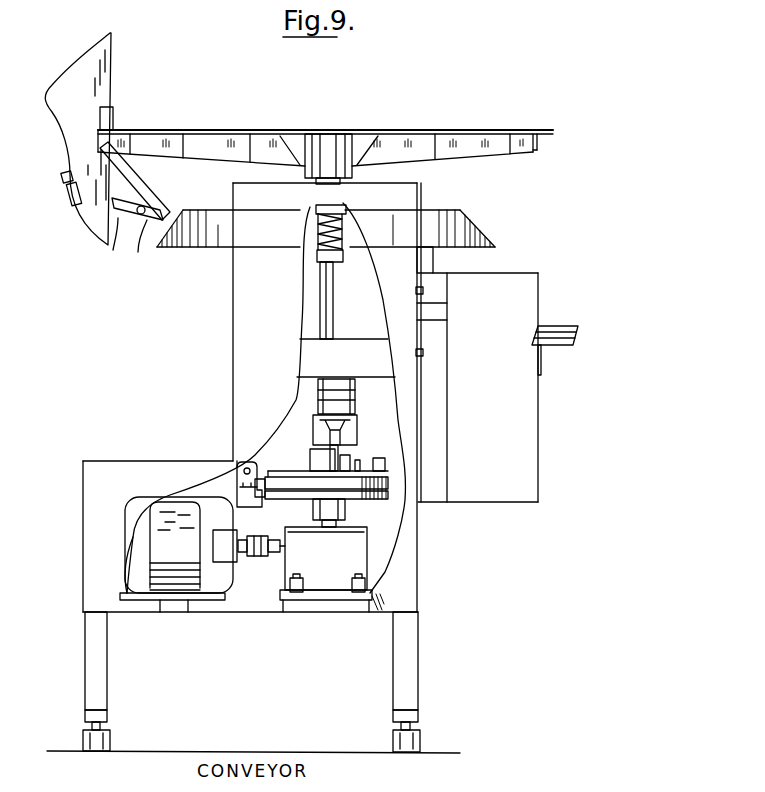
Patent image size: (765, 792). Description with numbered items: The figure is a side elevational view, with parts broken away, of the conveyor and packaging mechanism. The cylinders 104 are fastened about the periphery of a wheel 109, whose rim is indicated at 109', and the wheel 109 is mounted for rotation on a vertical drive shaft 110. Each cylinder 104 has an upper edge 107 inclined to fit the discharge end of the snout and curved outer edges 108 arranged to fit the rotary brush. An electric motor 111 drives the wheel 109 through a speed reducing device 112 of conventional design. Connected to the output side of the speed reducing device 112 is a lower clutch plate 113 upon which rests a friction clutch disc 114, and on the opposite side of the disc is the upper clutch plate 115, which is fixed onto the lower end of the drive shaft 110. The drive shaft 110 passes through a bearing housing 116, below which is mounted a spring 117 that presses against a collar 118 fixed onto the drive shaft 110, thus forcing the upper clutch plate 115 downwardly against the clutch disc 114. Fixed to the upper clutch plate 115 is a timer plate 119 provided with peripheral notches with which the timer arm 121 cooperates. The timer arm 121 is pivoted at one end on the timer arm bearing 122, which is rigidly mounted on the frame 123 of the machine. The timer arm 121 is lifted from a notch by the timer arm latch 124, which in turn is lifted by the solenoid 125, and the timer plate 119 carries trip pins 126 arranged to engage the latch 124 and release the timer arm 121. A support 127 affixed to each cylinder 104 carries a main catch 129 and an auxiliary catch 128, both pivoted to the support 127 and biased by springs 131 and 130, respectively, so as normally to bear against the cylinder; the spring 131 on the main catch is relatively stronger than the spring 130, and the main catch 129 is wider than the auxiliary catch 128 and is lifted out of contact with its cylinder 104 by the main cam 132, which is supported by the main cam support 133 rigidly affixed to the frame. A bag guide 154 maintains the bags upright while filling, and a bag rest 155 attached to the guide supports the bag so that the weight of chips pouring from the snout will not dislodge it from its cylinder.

The cylinder 104 is at (100, 97).
The upper edge 107 is at (80, 66).
The curved outer edges 108 is at (68, 143).
The wheel 109 is at (325, 143).
The turntable rim 109' is at (537, 164).
The drive shaft 110 is at (330, 321).
The electric motor 111 is at (200, 522).
The speed reducing device 112 is at (360, 549).
The lower clutch plate 113 is at (343, 500).
The friction clutch disc 114 is at (390, 486).
The upper clutch plate 115 is at (300, 480).
The bearing housing 116 is at (341, 207).
The spring 117 is at (333, 240).
The collar 118 is at (336, 262).
The timer plate 119 is at (390, 472).
The timer arm 121 is at (303, 452).
The timer arm bearing 122 is at (238, 486).
The frame 123 is at (226, 478).
The timer arm latch 124 is at (346, 456).
The solenoid 125 is at (353, 403).
The trip pins 126 is at (366, 470).
The support 127 is at (127, 191).
The auxiliary catch 128 is at (157, 216).
The main catch 129 is at (145, 232).
The spring 130 is at (150, 207).
The spring 131 is at (117, 240).
The main cam 132 is at (486, 235).
The main cam support 133 is at (436, 269).
The bag guide 154 is at (540, 432).
The bag rest 155 is at (579, 335).